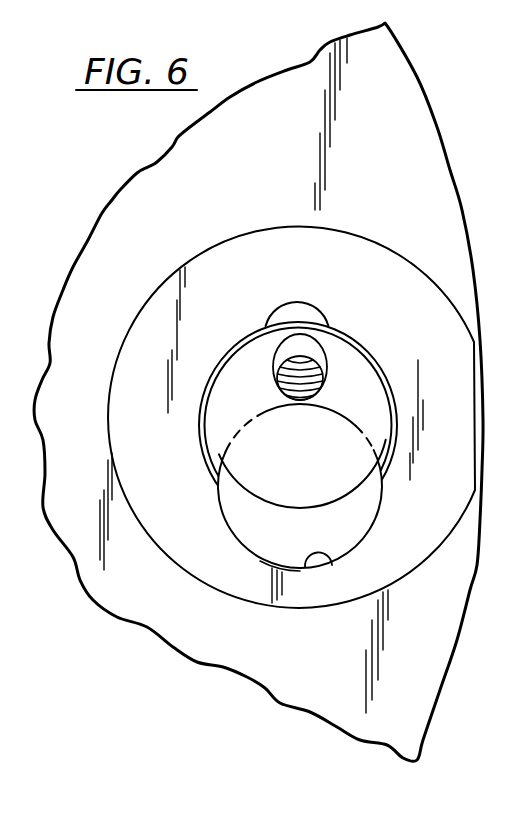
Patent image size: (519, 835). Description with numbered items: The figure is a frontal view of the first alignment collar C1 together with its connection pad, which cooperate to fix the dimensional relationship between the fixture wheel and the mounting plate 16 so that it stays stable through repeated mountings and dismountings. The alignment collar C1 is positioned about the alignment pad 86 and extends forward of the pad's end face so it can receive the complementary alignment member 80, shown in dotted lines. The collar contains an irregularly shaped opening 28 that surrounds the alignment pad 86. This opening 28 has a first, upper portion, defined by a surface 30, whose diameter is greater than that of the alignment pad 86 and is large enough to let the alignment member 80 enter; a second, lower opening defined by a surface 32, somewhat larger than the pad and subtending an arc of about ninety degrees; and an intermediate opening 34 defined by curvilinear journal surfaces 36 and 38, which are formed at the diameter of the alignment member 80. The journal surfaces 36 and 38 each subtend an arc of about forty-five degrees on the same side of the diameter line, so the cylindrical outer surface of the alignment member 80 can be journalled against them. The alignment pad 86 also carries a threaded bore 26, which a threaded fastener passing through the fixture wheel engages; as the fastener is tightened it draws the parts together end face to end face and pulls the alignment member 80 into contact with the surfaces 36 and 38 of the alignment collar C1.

The mounting plate 16 is at (422, 73).
The first alignment collar C1 is at (200, 252).
The threaded bore 26 is at (318, 366).
The surface 30 is at (352, 352).
The irregularly shaped opening 28 is at (370, 391).
The alignment member 80 is at (373, 438).
The alignment pad 86 is at (262, 396).
The intermediate opening 34 is at (290, 471).
The curvilinear journal surface 36 is at (225, 523).
The curvilinear journal surface 38 is at (373, 522).
The surface 32 is at (332, 563).